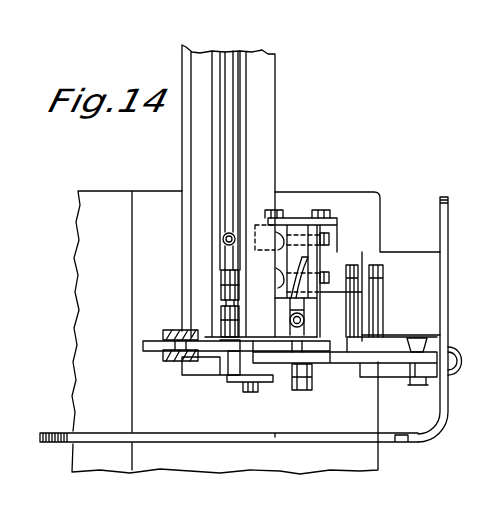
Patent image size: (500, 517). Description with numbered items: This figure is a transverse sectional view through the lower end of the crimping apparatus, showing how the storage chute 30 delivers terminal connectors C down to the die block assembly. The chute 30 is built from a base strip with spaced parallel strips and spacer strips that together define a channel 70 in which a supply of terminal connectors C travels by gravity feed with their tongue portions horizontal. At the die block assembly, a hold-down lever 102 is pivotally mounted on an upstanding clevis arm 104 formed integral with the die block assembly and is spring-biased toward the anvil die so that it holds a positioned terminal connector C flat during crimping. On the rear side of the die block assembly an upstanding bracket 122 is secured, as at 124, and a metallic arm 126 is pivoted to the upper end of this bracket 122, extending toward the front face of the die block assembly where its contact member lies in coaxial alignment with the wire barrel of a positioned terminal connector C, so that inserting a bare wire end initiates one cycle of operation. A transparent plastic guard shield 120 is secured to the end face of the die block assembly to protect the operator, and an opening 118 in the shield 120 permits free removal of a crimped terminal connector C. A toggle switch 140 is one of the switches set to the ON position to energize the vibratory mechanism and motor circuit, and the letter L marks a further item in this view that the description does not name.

The storage chute 30 is at (268, 88).
The channel 70 is at (228, 133).
The securing point of upstanding bracket 124 is at (325, 210).
The upstanding bracket 122 is at (335, 230).
The metallic arm 126 is at (317, 262).
The clevis arm 104 is at (400, 367).
The hold-down lever 102 is at (378, 357).
The toggle switch 140 is at (457, 367).
The opening 118 is at (403, 437).
The guard shield 120 is at (147, 433).
The bracket L is at (208, 358).
The terminal connector C is at (313, 362).